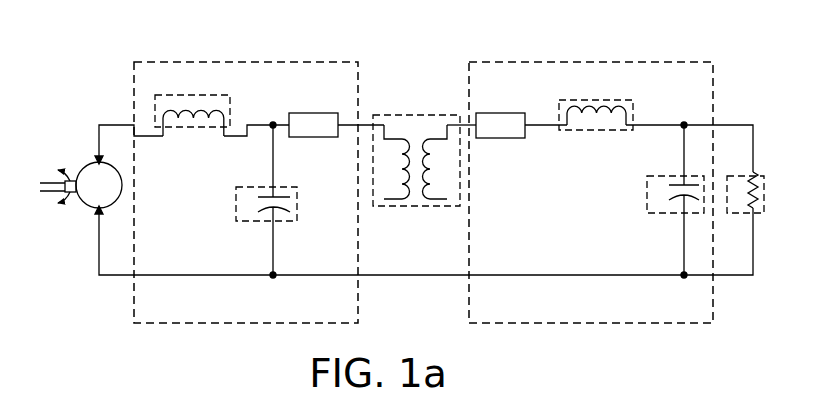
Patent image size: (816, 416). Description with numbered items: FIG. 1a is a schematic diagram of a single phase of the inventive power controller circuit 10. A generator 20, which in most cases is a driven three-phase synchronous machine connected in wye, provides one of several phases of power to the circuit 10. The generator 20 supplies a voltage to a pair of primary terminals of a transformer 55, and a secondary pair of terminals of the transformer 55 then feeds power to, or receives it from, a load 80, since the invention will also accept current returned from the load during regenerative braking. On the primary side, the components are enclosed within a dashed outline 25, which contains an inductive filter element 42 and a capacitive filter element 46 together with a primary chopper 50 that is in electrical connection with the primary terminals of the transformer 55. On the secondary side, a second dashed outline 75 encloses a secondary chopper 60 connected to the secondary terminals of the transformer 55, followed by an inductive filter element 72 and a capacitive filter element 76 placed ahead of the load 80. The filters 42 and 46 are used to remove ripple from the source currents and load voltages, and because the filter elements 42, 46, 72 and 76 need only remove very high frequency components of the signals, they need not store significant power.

The circuit 10 is at (449, 29).
The generator 20 is at (81, 185).
The first impedance matching module 25 is at (246, 192).
The inductive filter element 42 is at (192, 115).
The capacitive filter element 46 is at (266, 200).
The primary chopper 50 is at (313, 125).
The transformer 55 is at (416, 160).
The secondary chopper 60 is at (500, 125).
The inductive filter element 72 is at (596, 115).
The second module 75 is at (591, 192).
The capacitive filter element 76 is at (675, 200).
The load 80 is at (745, 192).